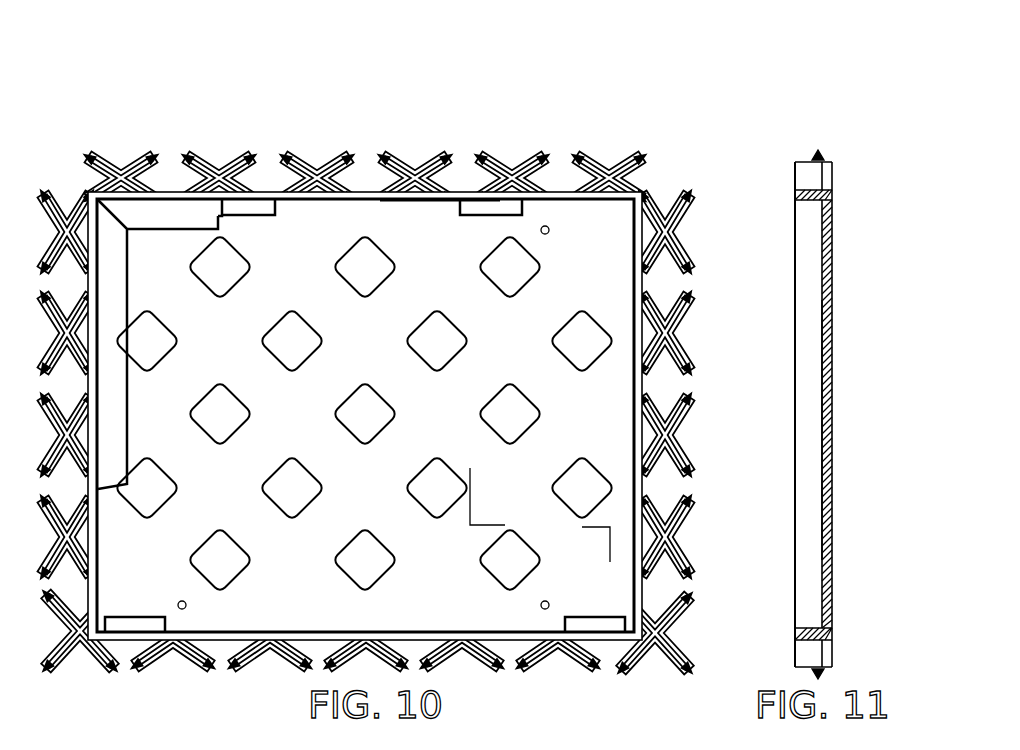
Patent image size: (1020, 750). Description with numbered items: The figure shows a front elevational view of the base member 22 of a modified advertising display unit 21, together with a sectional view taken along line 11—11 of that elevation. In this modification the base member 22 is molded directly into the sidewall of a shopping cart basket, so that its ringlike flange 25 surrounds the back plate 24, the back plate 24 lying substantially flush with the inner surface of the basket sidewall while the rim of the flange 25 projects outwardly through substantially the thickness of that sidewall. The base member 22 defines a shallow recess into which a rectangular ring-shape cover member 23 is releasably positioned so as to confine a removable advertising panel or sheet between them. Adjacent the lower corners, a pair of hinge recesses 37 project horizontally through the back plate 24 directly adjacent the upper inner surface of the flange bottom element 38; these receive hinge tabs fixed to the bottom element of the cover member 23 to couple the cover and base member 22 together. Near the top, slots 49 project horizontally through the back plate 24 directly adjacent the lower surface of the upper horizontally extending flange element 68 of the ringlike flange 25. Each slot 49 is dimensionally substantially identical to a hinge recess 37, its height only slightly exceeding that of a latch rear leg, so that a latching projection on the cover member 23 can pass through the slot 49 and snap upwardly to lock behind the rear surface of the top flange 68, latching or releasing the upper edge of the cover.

In FIG. 10, the advertising display unit 21 is at (645, 94).
In FIG. 10, the base member 22 is at (563, 194).
In FIG. 11, the base member 22 is at (832, 290).
In FIG. 10, the cover member 23 is at (155, 205).
In FIG. 10, the back plate 24 is at (364, 413).
In FIG. 11, the back plate 24 is at (832, 430).
In FIG. 10, the ringlike flange 25 is at (366, 192).
In FIG. 11, the ringlike flange 25 is at (812, 190).
In FIG. 10, the hinge recess 37 is at (128, 628).
In FIG. 11, the hinge recess 37 is at (828, 625).
In FIG. 10, the flange bottom element 38 is at (222, 640).
In FIG. 11, the flange bottom element 38 is at (812, 630).
In FIG. 10, the slot 49 is at (258, 200).
In FIG. 11, the slot 49 is at (826, 210).
In FIG. 10, the upper horizontally extending flange element 68 is at (433, 199).
In FIG. 10, the section line 11 is at (473, 225).